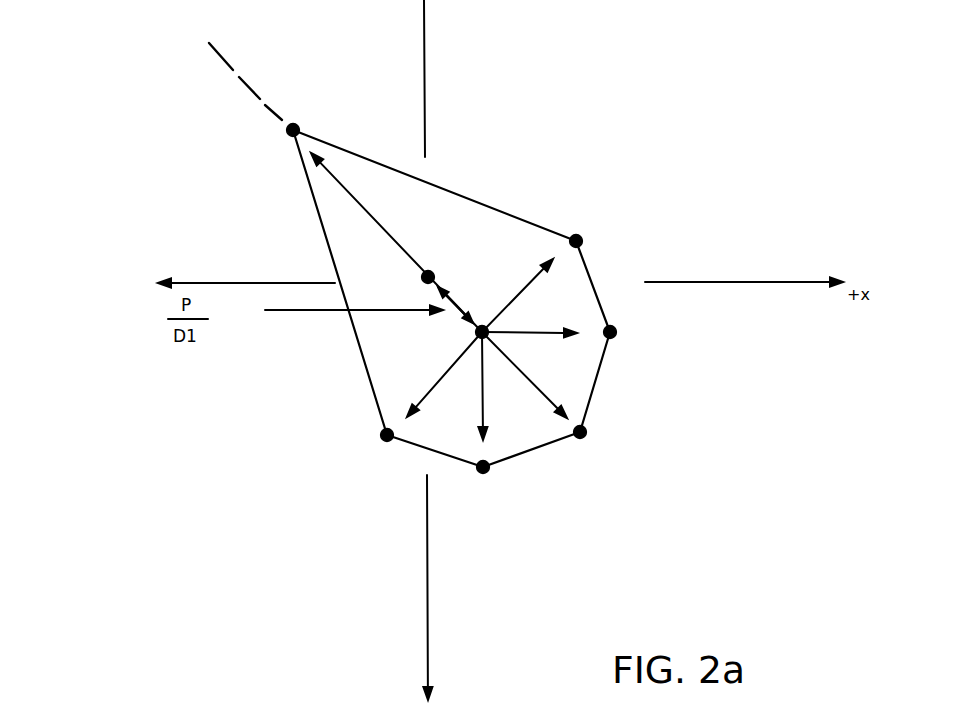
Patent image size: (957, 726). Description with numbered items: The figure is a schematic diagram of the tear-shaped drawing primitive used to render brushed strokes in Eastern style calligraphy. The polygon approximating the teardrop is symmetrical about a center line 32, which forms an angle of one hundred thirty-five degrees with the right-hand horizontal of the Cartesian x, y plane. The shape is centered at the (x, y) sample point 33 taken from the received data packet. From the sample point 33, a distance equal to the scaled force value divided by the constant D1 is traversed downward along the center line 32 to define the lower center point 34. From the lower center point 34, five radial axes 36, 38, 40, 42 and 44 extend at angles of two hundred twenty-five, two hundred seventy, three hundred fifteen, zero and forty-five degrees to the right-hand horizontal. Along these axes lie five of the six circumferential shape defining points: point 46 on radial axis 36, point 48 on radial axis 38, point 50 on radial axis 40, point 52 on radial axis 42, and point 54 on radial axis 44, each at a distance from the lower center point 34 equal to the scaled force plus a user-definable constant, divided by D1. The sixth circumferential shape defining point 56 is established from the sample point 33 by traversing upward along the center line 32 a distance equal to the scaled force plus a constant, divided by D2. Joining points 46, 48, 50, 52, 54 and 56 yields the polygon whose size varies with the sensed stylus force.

The center line 32 is at (247, 80).
The (x, y) sample point 33 is at (433, 276).
The lower center point 34 is at (474, 335).
The radial axis 36 is at (455, 363).
The radial axis 38 is at (484, 391).
The radial axis 40 is at (557, 384).
The radial axis 42 is at (512, 334).
The radial axis 44 is at (504, 310).
The circumferential shape defining point 46 is at (385, 440).
The circumferential shape defining point 48 is at (482, 473).
The circumferential shape defining point 50 is at (581, 437).
The circumferential shape defining point 52 is at (637, 343).
The circumferential shape defining point 54 is at (580, 238).
The sixth circumferential shape defining point 56 is at (291, 137).